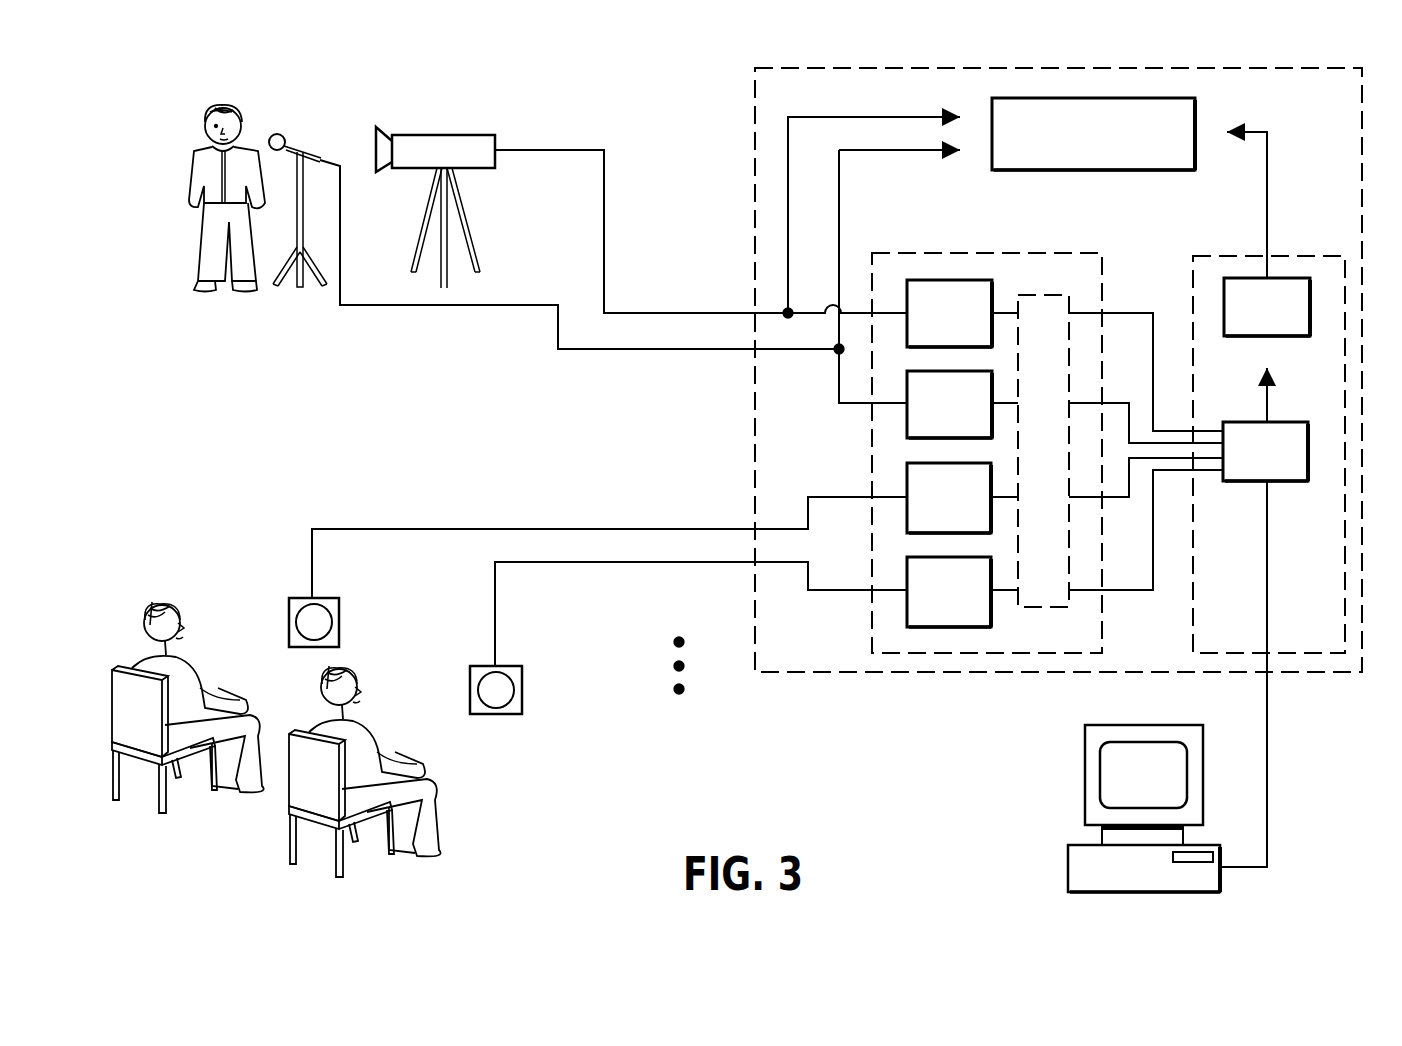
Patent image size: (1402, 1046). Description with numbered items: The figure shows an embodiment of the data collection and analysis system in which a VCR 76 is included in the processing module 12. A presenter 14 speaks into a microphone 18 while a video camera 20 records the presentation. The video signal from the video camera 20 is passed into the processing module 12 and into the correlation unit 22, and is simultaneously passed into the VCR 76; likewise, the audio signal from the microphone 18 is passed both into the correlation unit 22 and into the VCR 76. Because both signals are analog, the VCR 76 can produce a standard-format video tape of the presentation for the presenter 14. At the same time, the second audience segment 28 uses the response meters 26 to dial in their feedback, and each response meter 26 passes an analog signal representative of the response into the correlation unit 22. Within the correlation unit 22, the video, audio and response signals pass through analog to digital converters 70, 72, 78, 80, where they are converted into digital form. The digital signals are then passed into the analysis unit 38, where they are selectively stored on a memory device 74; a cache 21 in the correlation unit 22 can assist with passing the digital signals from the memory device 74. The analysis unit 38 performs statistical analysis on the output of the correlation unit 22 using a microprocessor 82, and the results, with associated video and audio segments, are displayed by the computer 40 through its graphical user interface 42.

The processing module 12 is at (1310, 106).
The presenter 14 is at (247, 96).
The microphone 18 is at (300, 152).
The video camera 20 is at (447, 140).
The cache 21 is at (1031, 455).
The correlation unit 22 is at (1061, 642).
The response meter 26 is at (352, 627).
The second audience segment 28 is at (270, 842).
The analysis unit 38 is at (1297, 642).
The computer 40 is at (1122, 878).
The graphical user interface 42 is at (1125, 750).
The analog to digital converter 70 is at (935, 336).
The analog to digital converter 72 is at (935, 427).
The memory device 74 is at (1251, 464).
The VCR 76 is at (1067, 160).
The analog to digital converter 78 is at (935, 521).
The analog to digital converter 80 is at (935, 615).
The microprocessor 82 is at (1282, 331).